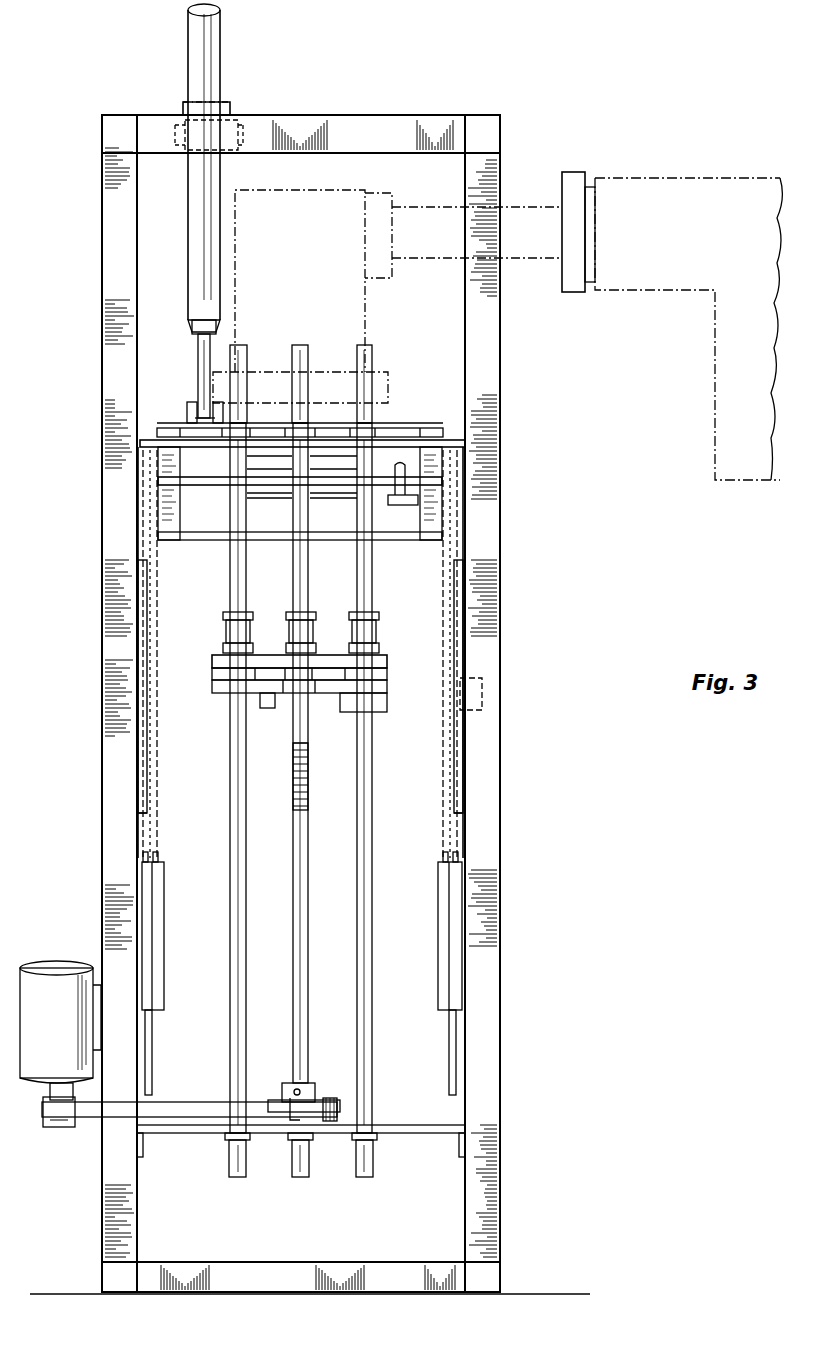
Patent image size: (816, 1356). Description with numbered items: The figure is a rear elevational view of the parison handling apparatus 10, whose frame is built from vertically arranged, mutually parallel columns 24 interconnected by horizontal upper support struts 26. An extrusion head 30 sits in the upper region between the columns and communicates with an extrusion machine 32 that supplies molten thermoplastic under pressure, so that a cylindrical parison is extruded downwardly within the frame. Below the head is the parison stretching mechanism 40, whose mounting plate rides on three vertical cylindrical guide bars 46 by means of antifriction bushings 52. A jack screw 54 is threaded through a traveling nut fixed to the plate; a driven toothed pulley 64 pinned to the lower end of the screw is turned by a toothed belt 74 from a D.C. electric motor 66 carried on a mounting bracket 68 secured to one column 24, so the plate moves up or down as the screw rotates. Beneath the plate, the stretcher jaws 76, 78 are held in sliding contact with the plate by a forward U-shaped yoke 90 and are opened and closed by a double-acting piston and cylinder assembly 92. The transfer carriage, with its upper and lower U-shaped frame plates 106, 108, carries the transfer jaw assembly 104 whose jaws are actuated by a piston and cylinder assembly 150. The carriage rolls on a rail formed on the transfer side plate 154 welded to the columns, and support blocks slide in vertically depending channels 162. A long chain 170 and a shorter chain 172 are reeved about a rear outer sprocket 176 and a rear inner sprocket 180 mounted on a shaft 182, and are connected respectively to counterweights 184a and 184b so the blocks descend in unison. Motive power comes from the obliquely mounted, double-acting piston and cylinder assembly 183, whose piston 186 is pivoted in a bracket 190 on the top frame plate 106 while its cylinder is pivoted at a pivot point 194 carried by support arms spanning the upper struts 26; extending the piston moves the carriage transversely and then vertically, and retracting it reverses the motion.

The apparatus 10 is at (534, 437).
The column 24 is at (110, 322).
The upper support strut 26 is at (398, 115).
The extrusion head 30 is at (367, 307).
The extrusion machine 32 is at (732, 162).
The parison stretching mechanism 40 is at (222, 729).
The guide bar 46 is at (303, 558).
The antifriction bushing 52 is at (225, 620).
The jack screw 54 is at (305, 940).
The driven toothed pulley 64 is at (282, 1090).
The D.C. electric motor 66 is at (42, 967).
The mounting bracket 68 is at (117, 980).
The toothed belt 74 is at (178, 1105).
The stretcher jaw 76 is at (380, 683).
The stretcher jaw 78 is at (218, 683).
The forward U-shaped yoke 90 is at (268, 712).
The piston and cylinder assembly 92 is at (432, 713).
The transfer jaw assembly 104 is at (180, 553).
The upper frame plate 106 is at (322, 420).
The lower frame plate 108 is at (398, 542).
The piston and cylinder assembly 150 is at (340, 490).
The transfer side plate 154 is at (138, 512).
The vertical channel 162 is at (142, 650).
The chain 170 is at (138, 822).
The chain 172 is at (155, 838).
The rear outer sprocket 176 is at (143, 453).
The rear inner sprocket 180 is at (160, 448).
The shaft 182 is at (205, 492).
The piston and cylinder assembly 183 is at (222, 48).
The counterweight 184a is at (162, 1005).
The counterweight 184b is at (145, 1032).
The piston 186 is at (175, 318).
The bracket 190 is at (188, 417).
The pivot point 194 is at (168, 133).